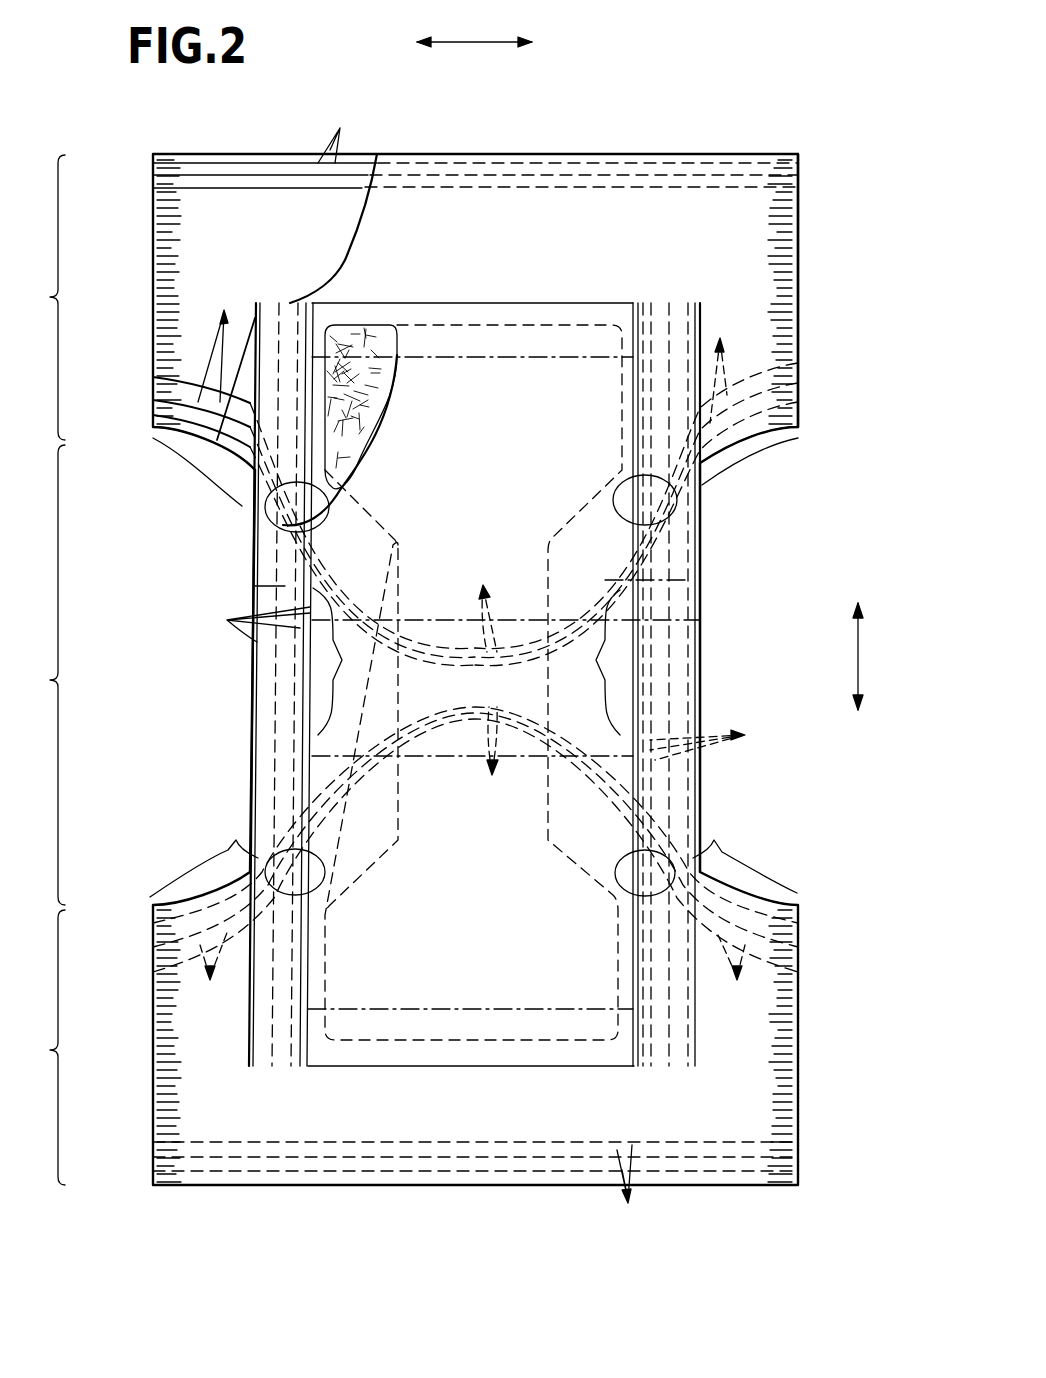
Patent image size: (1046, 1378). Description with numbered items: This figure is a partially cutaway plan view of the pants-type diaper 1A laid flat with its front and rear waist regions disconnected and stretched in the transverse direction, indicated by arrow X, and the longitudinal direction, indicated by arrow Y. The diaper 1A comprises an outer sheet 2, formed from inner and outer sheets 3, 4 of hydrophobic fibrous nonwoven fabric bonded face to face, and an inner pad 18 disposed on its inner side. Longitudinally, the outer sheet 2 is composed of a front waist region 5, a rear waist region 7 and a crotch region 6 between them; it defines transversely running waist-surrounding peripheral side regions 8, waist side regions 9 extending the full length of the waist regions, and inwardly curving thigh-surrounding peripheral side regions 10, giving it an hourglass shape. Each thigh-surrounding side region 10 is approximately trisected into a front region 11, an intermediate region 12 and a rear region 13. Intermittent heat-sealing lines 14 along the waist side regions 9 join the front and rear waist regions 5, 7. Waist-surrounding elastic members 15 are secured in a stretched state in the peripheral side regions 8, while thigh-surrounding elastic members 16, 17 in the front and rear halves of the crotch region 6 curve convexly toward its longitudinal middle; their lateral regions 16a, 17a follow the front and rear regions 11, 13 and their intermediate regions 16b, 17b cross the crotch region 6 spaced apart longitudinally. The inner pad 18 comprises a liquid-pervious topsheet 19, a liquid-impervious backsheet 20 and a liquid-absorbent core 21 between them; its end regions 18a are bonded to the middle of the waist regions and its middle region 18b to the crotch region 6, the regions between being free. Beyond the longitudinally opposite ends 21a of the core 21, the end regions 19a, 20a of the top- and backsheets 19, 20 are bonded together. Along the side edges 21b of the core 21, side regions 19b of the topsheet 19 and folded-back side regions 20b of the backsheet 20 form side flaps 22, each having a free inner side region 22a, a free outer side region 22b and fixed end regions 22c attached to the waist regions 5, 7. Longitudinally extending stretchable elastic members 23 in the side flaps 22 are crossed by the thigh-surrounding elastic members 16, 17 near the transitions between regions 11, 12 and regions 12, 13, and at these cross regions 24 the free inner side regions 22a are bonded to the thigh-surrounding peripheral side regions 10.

The diaper 1A is at (664, 131).
The outer sheet 2 is at (798, 152).
The inner sheet 3 is at (443, 163).
The outer sheet 4 is at (277, 160).
The front waist region 5 is at (42, 1047).
The crotch region 6 is at (44, 675).
The rear waist region 7 is at (45, 297).
The waist-surrounding peripheral side regions 8 is at (570, 165).
The waist side regions 9 is at (165, 272).
The thigh-surrounding peripheral side regions 10 is at (237, 433).
The front region 11 is at (473, 854).
The intermediate region 12 is at (466, 661).
The rear region 13 is at (248, 508).
The heat-sealing lines 14 is at (165, 218).
The waist-surrounding elastic members 15 is at (477, 666).
The thigh-surrounding elastic members 16 is at (765, 942).
The lateral regions 16a is at (471, 973).
The intermediate regions 16b is at (484, 759).
The thigh-surrounding elastic members 17 is at (165, 405).
The lateral regions 17a is at (477, 348).
The intermediate regions 17b is at (479, 602).
The inner pad 18 is at (700, 300).
The end regions 18a is at (583, 337).
The middle region 18b is at (593, 637).
The topsheet 19 is at (497, 380).
The end regions 19a is at (518, 313).
The side regions 19b is at (267, 772).
The backsheet 20 is at (318, 370).
The end regions 20a is at (372, 313).
The side regions 20b is at (280, 584).
The liquid-absorbent core 21 is at (375, 353).
The longitudinally opposite ends 21a is at (557, 325).
The side edges 21b is at (622, 428).
The side flaps 22 is at (288, 327).
The free inner side region 22a is at (292, 663).
The free outer side region 22b is at (268, 728).
The fixed end regions 22c is at (658, 327).
The stretchable elastic members 23 is at (485, 679).
The cross regions 24 is at (283, 513).
The transverse direction X is at (486, 41).
The longitudinal direction Y is at (862, 652).